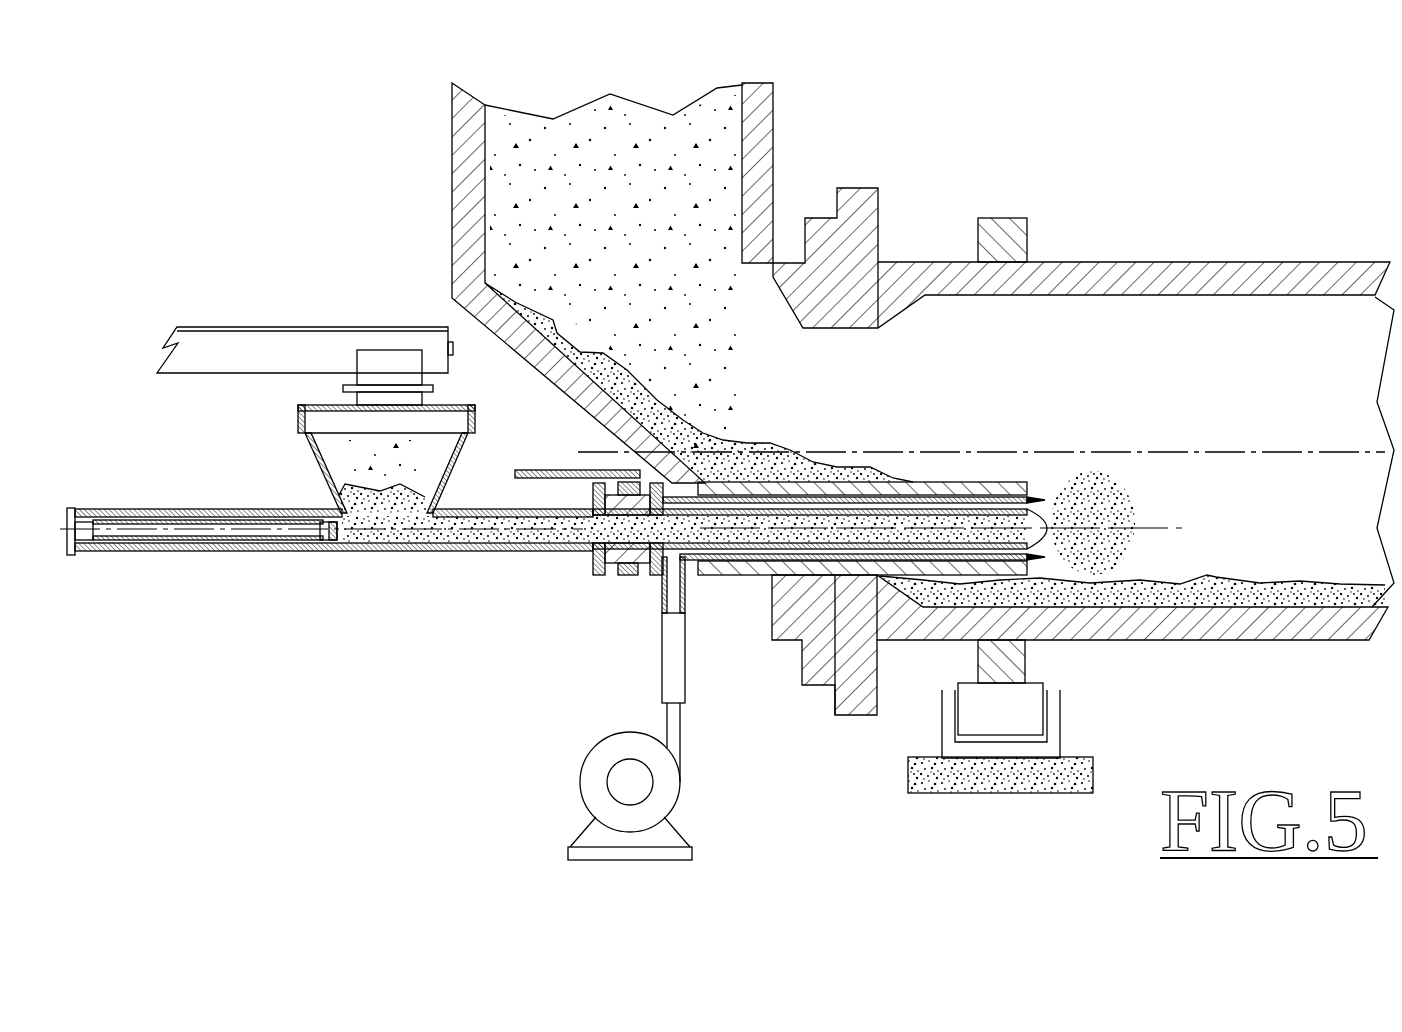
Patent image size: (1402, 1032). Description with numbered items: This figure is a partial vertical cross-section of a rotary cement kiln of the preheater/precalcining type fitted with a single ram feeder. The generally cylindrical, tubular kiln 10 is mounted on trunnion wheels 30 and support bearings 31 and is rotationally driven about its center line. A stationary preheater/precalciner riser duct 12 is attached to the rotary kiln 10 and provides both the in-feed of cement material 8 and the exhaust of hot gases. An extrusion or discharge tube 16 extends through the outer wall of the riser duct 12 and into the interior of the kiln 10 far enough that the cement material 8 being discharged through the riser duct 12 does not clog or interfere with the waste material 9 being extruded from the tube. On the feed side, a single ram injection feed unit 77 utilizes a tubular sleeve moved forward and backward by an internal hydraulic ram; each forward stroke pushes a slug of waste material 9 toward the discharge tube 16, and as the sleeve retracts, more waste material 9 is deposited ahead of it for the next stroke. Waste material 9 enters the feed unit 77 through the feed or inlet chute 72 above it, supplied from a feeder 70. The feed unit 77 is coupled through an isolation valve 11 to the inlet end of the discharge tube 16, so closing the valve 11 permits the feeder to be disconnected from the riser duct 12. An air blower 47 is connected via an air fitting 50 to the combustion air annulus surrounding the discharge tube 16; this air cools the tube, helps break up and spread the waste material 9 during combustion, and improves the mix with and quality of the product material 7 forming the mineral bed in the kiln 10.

The product material 7 is at (775, 452).
The cement material 8 is at (648, 208).
The waste material 9 is at (397, 465).
The kiln 10 is at (1266, 256).
The isolation valve 11 is at (614, 593).
The riser duct 12 is at (452, 197).
The extrusion or discharge tube 16 is at (985, 470).
The trunnion wheels 30 is at (1027, 240).
The support bearings 31 is at (1062, 728).
The air blower 47 is at (680, 790).
The air fitting 50 is at (662, 640).
The feeder 70 is at (237, 327).
The feed or inlet chute 72 is at (307, 463).
The single ram injection feed unit 77 is at (390, 566).